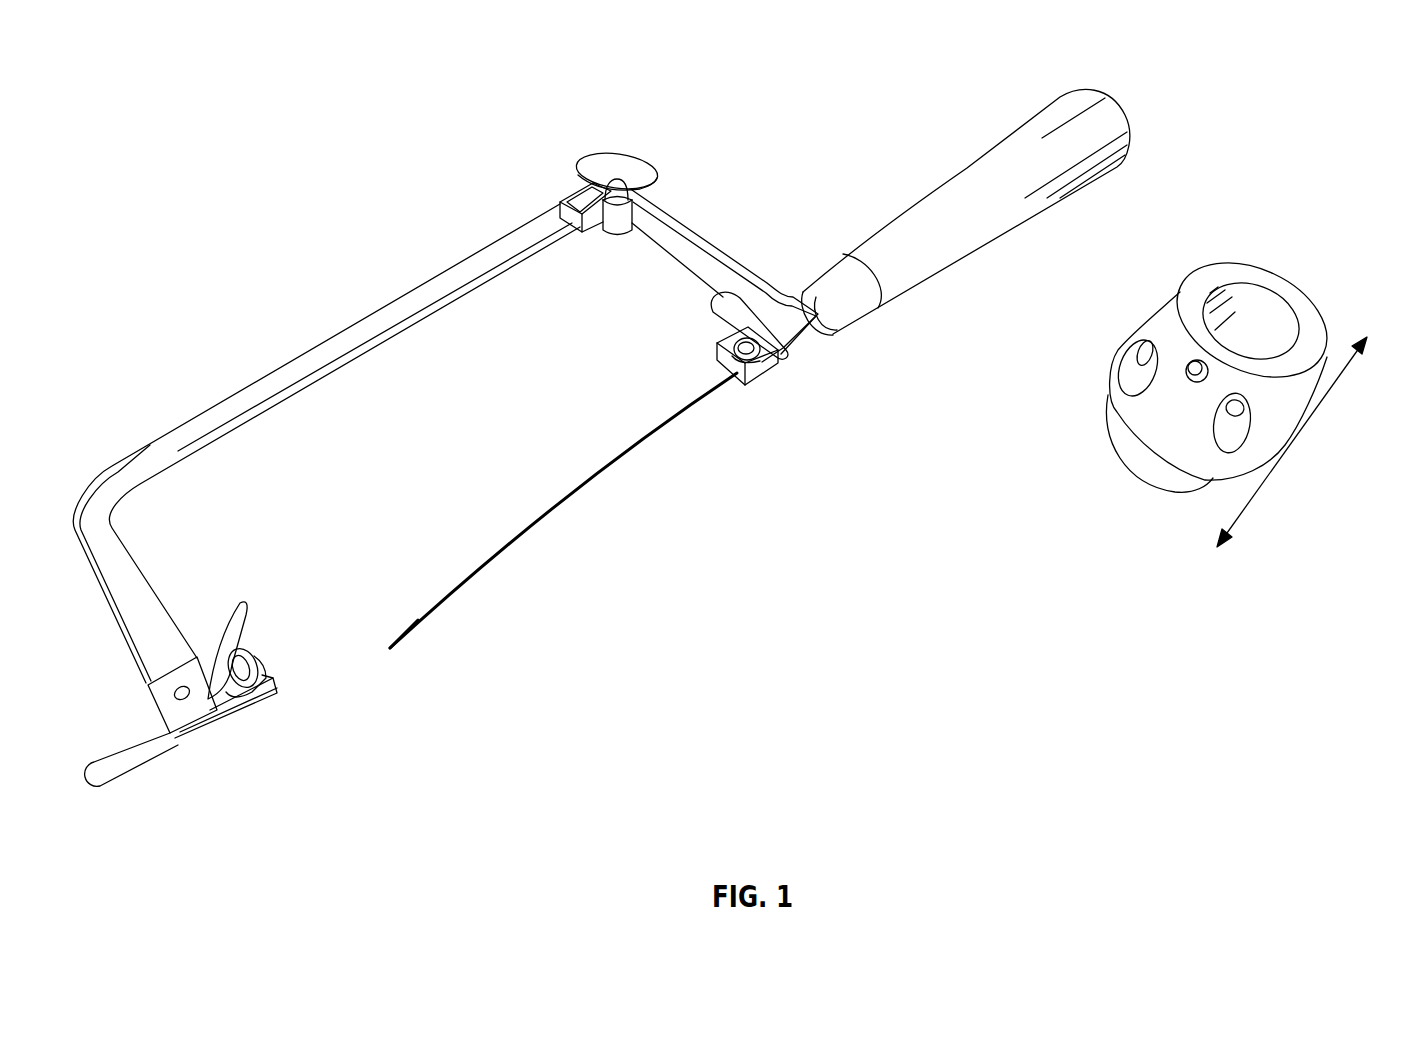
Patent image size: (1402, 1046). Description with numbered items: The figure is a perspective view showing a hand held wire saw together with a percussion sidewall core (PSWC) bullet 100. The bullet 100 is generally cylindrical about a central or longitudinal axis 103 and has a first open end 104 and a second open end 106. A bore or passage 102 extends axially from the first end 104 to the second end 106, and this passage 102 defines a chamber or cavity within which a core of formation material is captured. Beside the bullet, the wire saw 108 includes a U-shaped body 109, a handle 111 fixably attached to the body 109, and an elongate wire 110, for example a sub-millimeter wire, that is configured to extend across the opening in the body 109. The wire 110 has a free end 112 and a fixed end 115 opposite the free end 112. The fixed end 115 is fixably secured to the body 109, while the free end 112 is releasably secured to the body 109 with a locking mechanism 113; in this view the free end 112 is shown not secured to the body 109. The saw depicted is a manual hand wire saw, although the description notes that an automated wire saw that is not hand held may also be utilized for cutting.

The percussion sidewall core bullet 100 is at (1227, 388).
The bore or passage 102 is at (1283, 320).
The central or longitudinal axis 103 is at (1303, 430).
The first open end 104 is at (1200, 278).
The second open end 106 is at (1140, 477).
The wire saw 108 is at (601, 438).
The U-shaped body 109 is at (175, 428).
The elongate wire 110 is at (561, 553).
The handle 111 is at (967, 168).
The free end 112 is at (385, 653).
The locking mechanism 113 is at (265, 678).
The fixed end 115 is at (718, 360).